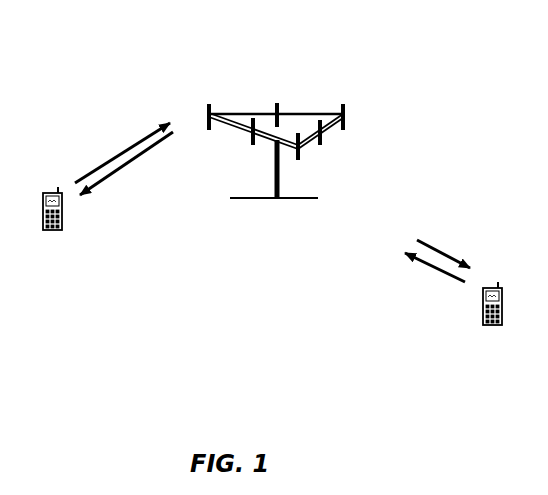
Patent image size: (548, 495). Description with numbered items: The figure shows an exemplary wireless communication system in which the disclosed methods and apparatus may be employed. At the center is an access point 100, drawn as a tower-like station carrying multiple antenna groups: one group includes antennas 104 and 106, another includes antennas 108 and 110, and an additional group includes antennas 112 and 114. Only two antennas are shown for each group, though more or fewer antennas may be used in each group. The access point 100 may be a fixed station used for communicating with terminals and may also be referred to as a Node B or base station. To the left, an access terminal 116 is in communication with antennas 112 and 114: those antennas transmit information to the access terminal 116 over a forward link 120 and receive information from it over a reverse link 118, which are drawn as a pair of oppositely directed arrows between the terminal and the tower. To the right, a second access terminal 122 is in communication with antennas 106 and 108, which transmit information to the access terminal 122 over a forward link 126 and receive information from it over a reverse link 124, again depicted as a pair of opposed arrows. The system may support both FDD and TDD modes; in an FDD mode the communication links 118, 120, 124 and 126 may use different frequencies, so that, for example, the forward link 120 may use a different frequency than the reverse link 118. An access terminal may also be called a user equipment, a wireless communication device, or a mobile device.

The access point 100 is at (263, 198).
The antenna 104 is at (300, 160).
The antenna 106 is at (322, 140).
The antenna 108 is at (345, 125).
The antenna 110 is at (280, 102).
The antenna 112 is at (212, 113).
The antenna 114 is at (253, 145).
The access terminal 116 is at (52, 192).
The reverse link 118 is at (120, 151).
The forward link 120 is at (131, 161).
The access terminal 122 is at (492, 286).
The reverse link 124 is at (431, 264).
The forward link 126 is at (444, 253).